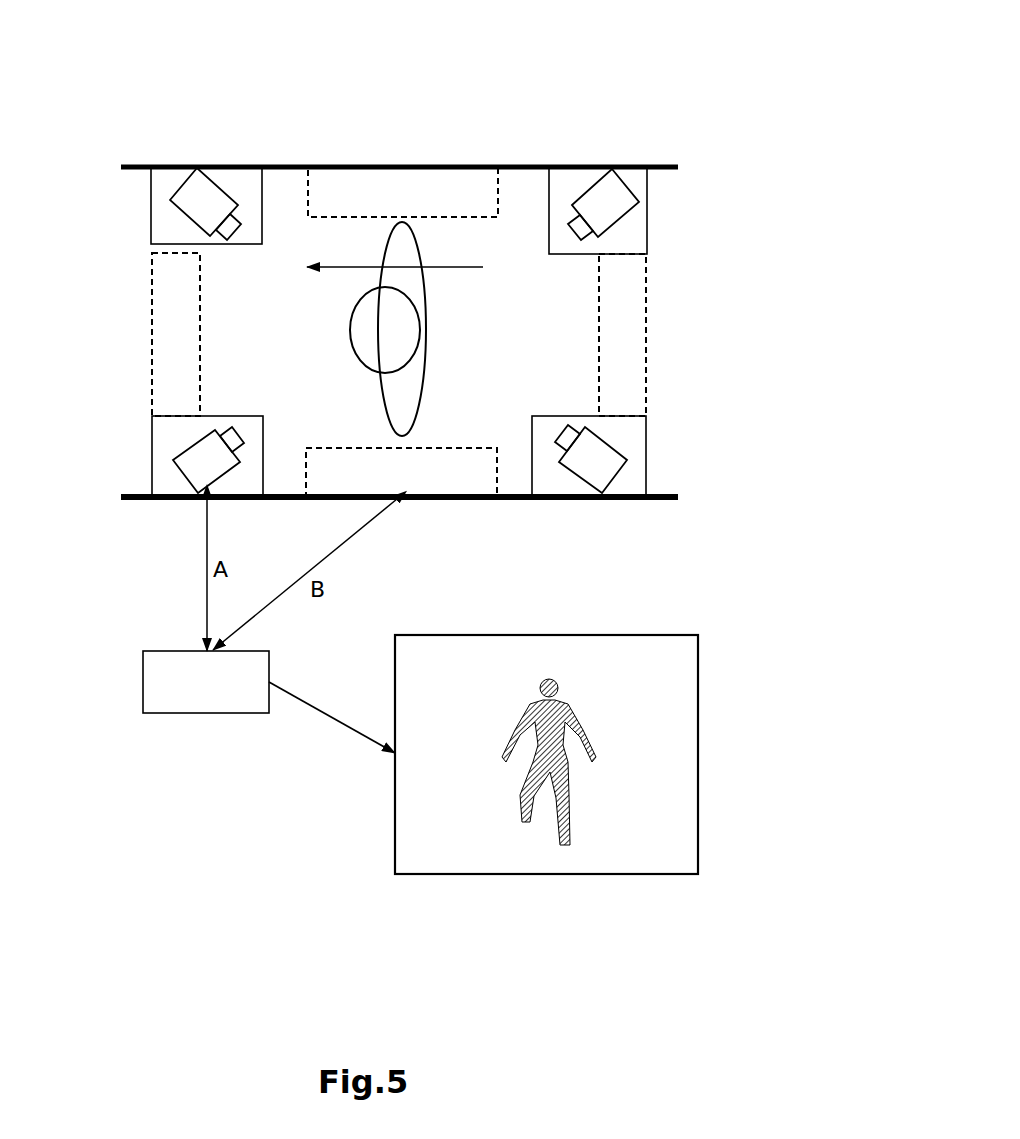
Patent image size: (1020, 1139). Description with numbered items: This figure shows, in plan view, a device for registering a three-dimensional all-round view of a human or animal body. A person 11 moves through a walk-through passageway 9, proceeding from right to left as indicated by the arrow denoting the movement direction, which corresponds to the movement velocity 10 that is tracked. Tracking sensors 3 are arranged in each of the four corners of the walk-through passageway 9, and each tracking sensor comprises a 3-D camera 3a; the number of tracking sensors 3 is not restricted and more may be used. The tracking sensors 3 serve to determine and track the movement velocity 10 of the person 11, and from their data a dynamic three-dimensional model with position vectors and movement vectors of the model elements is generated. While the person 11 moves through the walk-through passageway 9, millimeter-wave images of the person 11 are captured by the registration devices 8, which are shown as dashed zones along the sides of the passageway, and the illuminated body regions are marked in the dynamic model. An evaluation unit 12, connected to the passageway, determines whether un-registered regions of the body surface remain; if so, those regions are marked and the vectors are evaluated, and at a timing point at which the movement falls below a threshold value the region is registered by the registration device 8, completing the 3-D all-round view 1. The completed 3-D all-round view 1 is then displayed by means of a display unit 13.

The 3-D all-round view 1 is at (568, 693).
The tracking sensors 3 is at (152, 202).
The 3-D camera 3a is at (197, 180).
The registration devices 8 is at (357, 178).
The walk-through passageway 9 is at (712, 56).
The movement velocity 10 is at (435, 267).
The person 11 is at (398, 408).
The evaluation unit 12 is at (143, 677).
The display unit 13 is at (698, 758).